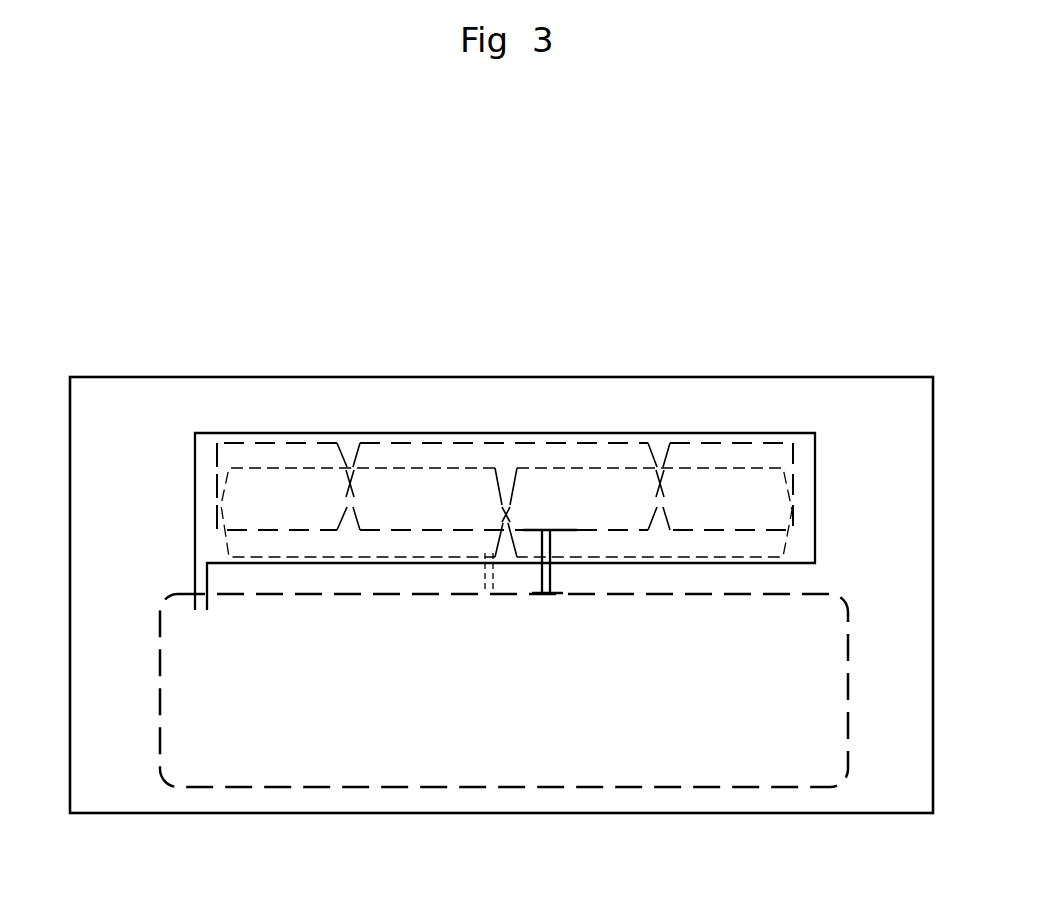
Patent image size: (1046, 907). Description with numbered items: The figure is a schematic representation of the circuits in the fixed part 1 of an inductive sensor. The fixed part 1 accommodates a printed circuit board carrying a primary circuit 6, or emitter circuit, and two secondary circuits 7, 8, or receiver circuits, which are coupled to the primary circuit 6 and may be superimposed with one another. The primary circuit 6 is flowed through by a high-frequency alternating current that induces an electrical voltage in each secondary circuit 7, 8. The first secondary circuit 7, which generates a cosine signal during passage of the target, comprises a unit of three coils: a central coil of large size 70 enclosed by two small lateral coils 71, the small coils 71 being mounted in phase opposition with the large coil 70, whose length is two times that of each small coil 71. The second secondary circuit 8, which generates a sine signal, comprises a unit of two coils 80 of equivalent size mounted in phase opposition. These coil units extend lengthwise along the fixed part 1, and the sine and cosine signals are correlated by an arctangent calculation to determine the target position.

The fixed part 1 is at (132, 377).
The primary circuit 6 is at (570, 433).
The first secondary circuit 7 is at (607, 443).
The second secondary circuit 8 is at (705, 468).
The unit of two coils 80 is at (552, 468).
The central coil of large size 70 is at (440, 443).
The small lateral coils 71 is at (262, 443).